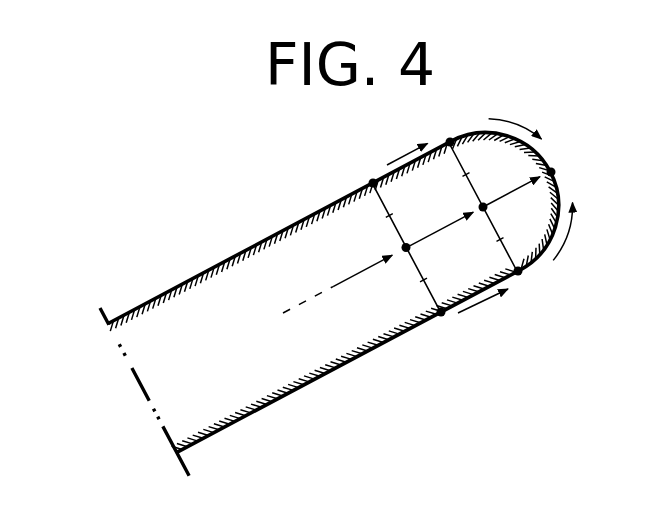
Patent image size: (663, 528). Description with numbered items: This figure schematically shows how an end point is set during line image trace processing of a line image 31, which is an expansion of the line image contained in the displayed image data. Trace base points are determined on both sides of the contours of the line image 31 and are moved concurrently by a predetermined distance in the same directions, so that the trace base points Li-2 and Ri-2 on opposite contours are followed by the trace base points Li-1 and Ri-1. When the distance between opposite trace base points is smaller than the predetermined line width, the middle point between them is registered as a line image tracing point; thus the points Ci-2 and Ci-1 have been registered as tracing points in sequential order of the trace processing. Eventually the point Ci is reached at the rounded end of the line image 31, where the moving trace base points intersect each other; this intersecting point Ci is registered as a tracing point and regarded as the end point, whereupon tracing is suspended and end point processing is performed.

The line image 31 is at (176, 291).
The trace base point Li-1 is at (438, 122).
The trace base point Li-2 is at (340, 169).
The intersecting point Ci is at (556, 172).
The line image tracing point Ci-1 is at (480, 205).
The line image tracing point Ci-2 is at (402, 247).
The trace base point Ri-1 is at (549, 290).
The trace base point Ri-2 is at (461, 338).